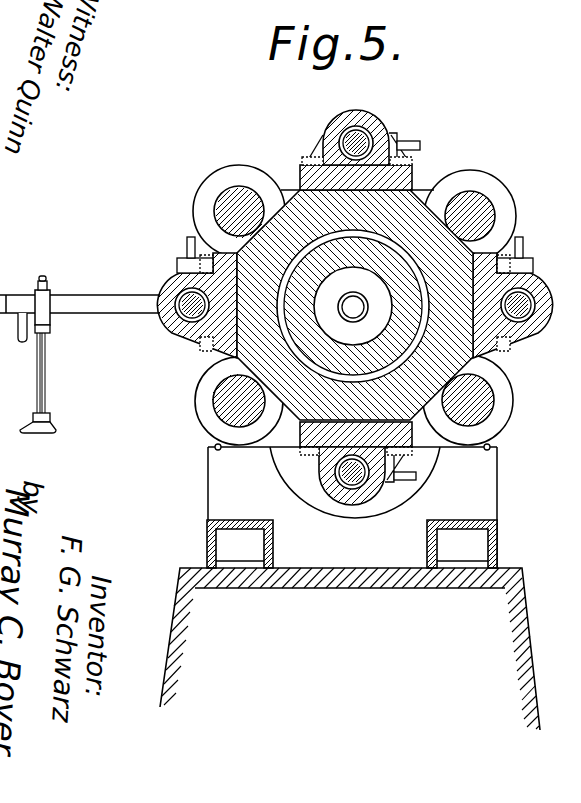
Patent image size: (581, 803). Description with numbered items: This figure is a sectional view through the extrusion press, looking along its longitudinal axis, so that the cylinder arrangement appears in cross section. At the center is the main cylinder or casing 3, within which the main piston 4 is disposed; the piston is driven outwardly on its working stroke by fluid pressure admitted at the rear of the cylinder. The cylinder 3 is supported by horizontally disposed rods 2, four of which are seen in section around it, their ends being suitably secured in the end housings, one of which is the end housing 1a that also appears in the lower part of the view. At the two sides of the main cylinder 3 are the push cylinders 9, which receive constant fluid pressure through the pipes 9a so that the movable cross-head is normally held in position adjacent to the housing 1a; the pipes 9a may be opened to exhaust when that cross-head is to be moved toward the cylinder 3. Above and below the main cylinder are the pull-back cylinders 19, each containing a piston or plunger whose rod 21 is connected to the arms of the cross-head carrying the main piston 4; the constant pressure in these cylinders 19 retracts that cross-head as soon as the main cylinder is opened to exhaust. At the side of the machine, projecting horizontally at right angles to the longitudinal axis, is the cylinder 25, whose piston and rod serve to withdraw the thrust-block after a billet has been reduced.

The end housing 1a is at (208, 521).
The rods 2 is at (233, 200).
The cylinder 3 is at (260, 367).
The main piston 4 is at (349, 258).
The push cylinders 9 is at (167, 316).
The pipes 9a is at (188, 259).
The pull-back cylinders 19 is at (378, 132).
The rods 21 is at (350, 139).
The cylinder 25 is at (86, 305).